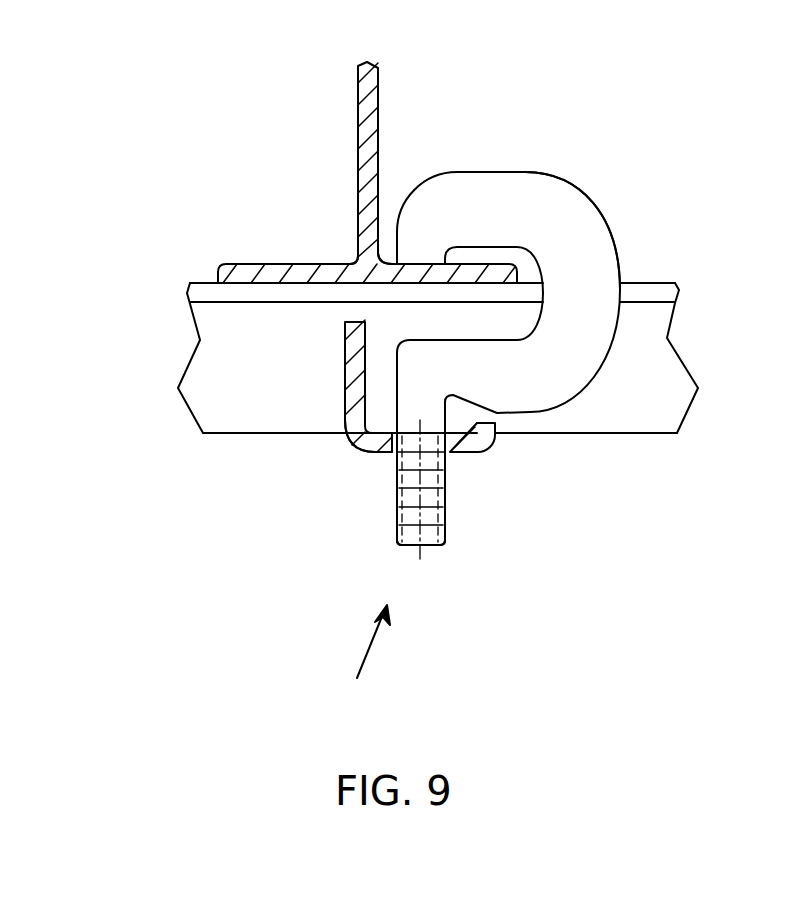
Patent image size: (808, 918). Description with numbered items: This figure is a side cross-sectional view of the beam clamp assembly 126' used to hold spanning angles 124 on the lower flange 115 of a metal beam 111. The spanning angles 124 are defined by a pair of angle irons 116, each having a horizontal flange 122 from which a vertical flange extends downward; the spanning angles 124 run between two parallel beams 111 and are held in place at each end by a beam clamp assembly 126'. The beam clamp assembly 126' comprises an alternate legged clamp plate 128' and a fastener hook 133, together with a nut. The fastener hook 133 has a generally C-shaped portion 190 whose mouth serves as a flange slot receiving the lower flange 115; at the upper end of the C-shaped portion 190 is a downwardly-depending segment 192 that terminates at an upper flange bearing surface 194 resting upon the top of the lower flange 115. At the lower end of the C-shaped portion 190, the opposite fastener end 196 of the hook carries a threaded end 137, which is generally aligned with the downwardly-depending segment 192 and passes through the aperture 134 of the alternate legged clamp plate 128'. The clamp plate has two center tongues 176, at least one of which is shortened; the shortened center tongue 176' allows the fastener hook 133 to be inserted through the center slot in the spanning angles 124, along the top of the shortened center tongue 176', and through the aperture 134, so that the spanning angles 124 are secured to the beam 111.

The metal beam 111 is at (372, 90).
The lower flange 115 is at (218, 268).
The upper flange bearing surface 194 is at (352, 275).
The horizontal flange 122 is at (190, 293).
The angle iron 116 is at (208, 415).
The spanning angles 124 is at (663, 352).
The generally C-shaped portion 190 is at (508, 183).
The downwardly-depending segment 192 is at (428, 223).
The fastener hook 133 is at (588, 217).
The center tongue 176 is at (273, 420).
The alternate legged clamp plate 128' is at (298, 483).
The fastener end 196 is at (397, 523).
The threaded end 137 is at (445, 543).
The aperture 134 is at (452, 452).
The shortened center tongue 176' is at (535, 455).
The beam clamp assembly 126' is at (361, 658).